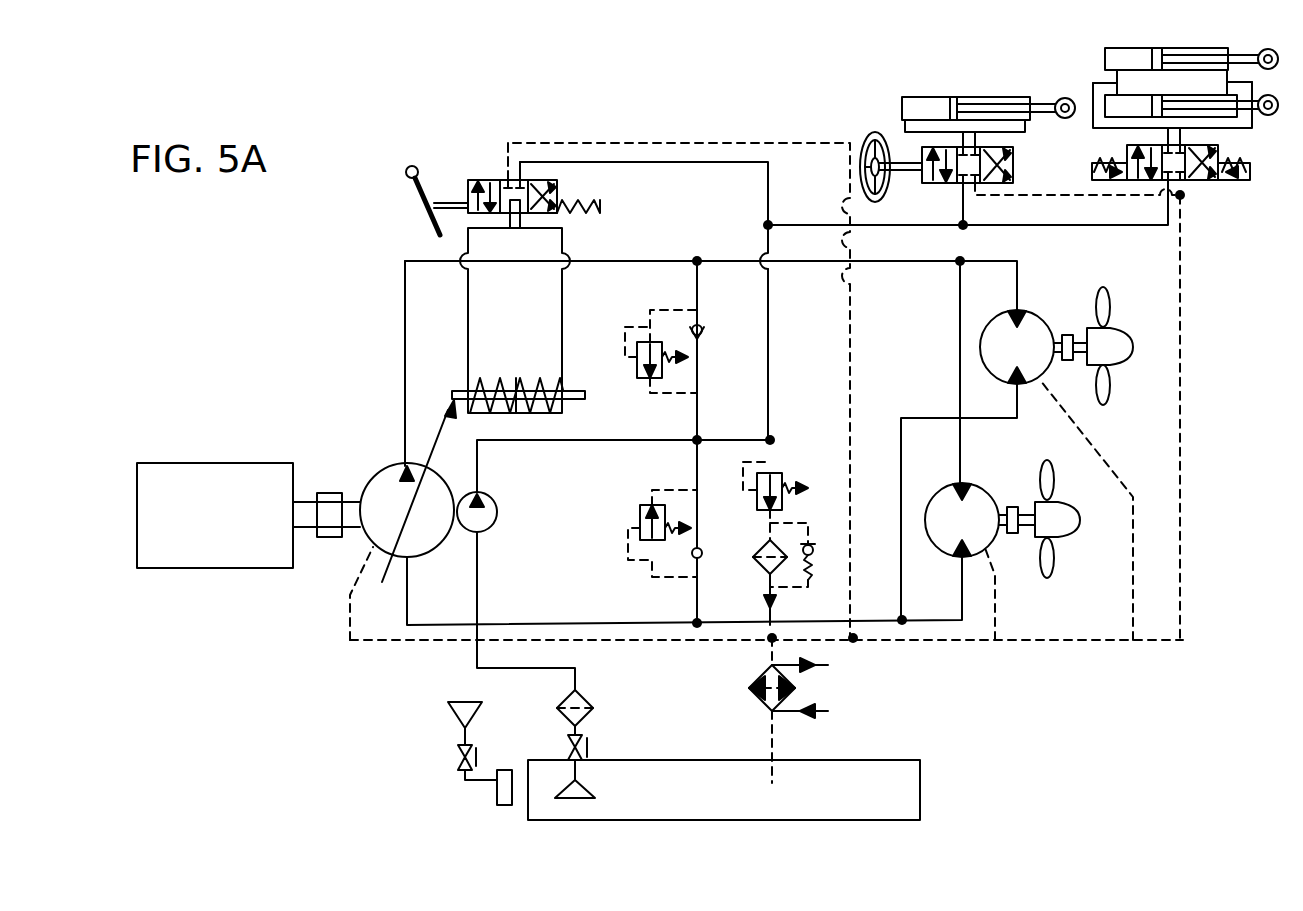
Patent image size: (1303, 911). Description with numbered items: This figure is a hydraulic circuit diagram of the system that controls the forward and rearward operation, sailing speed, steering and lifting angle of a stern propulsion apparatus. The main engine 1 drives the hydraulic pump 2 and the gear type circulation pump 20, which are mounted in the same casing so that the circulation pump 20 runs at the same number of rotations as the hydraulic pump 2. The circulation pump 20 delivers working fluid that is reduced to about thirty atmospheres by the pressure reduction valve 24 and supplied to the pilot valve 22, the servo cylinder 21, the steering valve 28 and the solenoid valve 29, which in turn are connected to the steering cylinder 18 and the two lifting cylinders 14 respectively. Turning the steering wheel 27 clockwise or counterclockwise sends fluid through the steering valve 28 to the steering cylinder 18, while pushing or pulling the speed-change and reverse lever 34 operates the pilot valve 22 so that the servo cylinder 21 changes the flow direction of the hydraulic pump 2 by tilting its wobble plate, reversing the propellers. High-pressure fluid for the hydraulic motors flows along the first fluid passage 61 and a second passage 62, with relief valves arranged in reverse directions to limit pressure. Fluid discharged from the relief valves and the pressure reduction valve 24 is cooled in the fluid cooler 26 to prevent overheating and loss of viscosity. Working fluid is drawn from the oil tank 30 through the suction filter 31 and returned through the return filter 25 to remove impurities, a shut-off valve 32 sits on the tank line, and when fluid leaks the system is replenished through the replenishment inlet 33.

The main engine 1 is at (211, 530).
The hydraulic pump 2 is at (377, 465).
The lifting cylinders 14 is at (1113, 95).
The steering cylinder 18 is at (973, 97).
The circulation pump 20 is at (497, 512).
The servo cylinder 21 is at (470, 386).
The pilot valve 22 is at (480, 180).
The pressure reduction valve 24 is at (782, 473).
The return filter 25 is at (812, 545).
The fluid cooler 26 is at (796, 683).
The steering wheel 27 is at (876, 132).
The steering valve 28 is at (1000, 147).
The solenoid valve 29 is at (1225, 182).
The oil tank 30 is at (720, 820).
The suction filter 31 is at (588, 698).
The shut-off valve 32 is at (590, 748).
The replenishment inlet 33 is at (450, 714).
The speed-change and reverse lever 34 is at (414, 197).
The first fluid passage 61 is at (697, 400).
The hydraulic line 62 is at (770, 347).